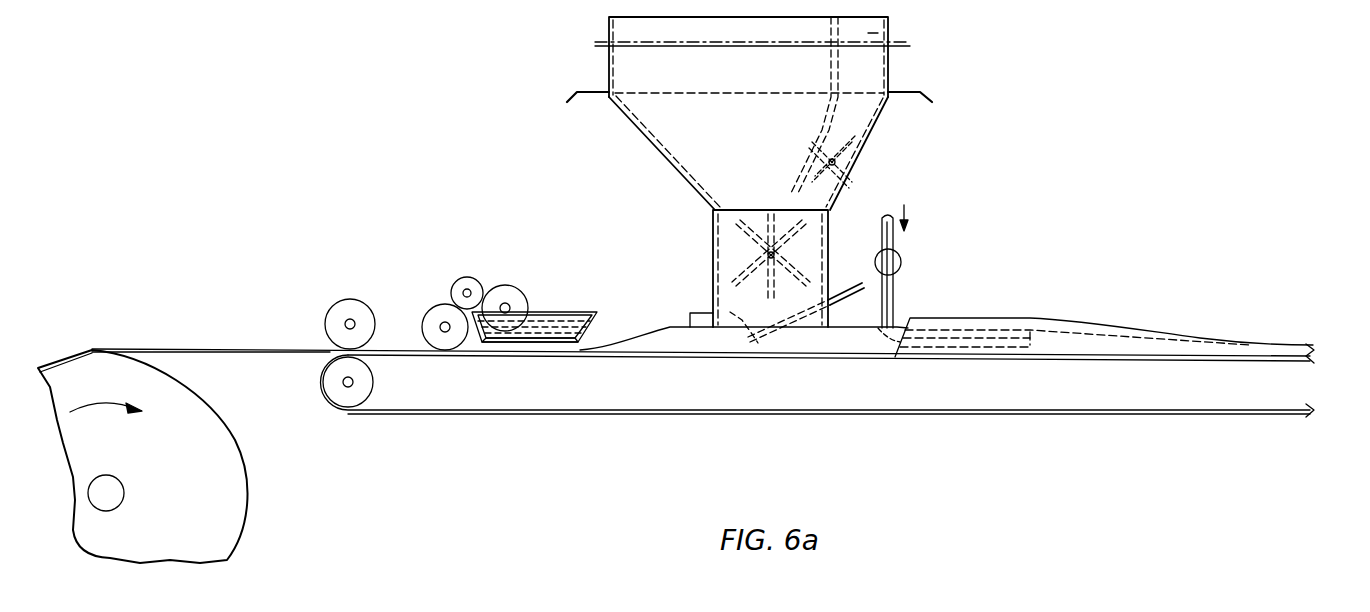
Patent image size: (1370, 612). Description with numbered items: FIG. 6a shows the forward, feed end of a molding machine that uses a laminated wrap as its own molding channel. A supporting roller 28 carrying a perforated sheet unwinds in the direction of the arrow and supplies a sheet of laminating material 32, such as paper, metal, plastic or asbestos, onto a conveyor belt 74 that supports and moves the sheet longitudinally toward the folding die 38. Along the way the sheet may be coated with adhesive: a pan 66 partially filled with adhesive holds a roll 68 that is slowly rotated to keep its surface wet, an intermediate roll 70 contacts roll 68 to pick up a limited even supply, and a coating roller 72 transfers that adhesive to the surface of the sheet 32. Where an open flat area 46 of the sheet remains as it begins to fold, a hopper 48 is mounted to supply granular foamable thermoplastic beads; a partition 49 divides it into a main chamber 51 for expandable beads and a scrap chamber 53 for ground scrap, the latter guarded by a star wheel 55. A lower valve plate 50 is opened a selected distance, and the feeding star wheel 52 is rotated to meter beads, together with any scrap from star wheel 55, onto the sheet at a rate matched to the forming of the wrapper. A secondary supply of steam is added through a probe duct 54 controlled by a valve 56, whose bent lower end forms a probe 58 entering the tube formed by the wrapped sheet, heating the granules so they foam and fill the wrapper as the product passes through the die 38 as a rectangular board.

The supporting roller 28 is at (224, 440).
The sheet of laminating material 32 is at (230, 347).
The folding die 38 is at (747, 335).
The open flat area 46 is at (553, 316).
The hopper 48 is at (891, 100).
The partition 49 is at (830, 86).
The lower valve plate 50 is at (862, 286).
The main chamber 51 is at (650, 31).
The star wheel 52 is at (716, 247).
The scrap chamber 53 is at (890, 33).
The probe duct 54 is at (896, 300).
The star wheel 55 is at (848, 166).
The valve 56 is at (901, 262).
The probe 58 is at (1030, 340).
The pan 66 is at (592, 330).
The roll 68 is at (512, 290).
The intermediate roll 70 is at (470, 277).
The coating roller 72 is at (425, 316).
The conveyor belt 74 is at (536, 410).